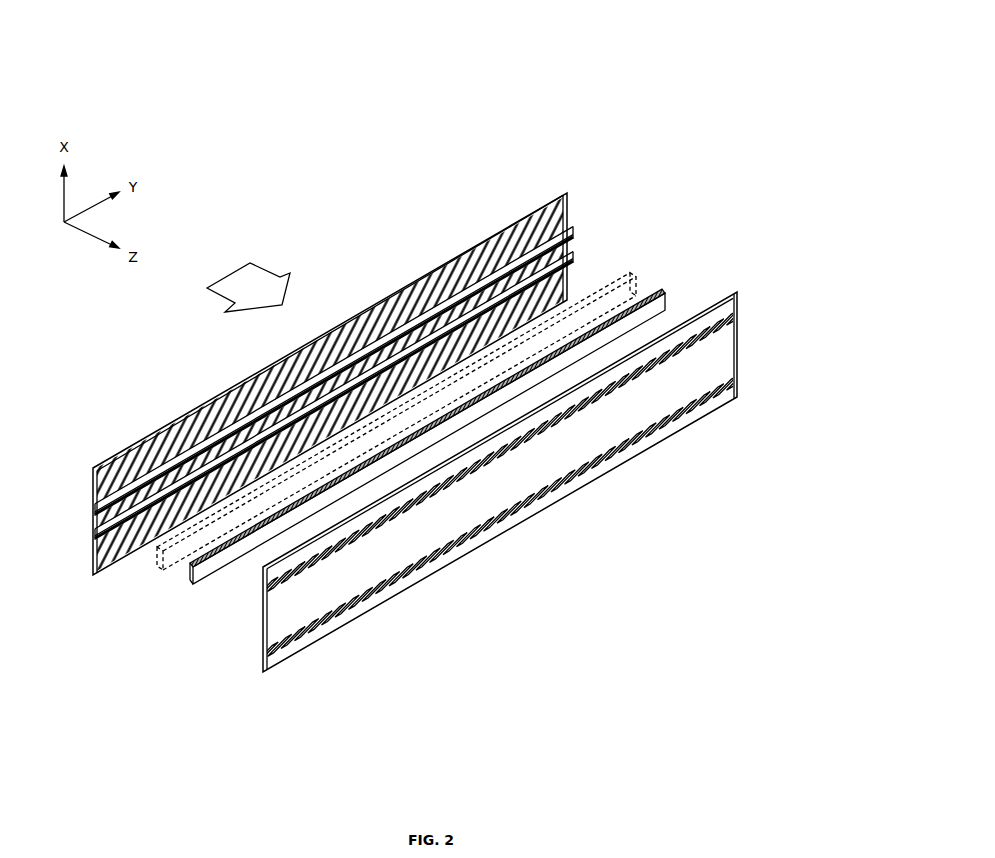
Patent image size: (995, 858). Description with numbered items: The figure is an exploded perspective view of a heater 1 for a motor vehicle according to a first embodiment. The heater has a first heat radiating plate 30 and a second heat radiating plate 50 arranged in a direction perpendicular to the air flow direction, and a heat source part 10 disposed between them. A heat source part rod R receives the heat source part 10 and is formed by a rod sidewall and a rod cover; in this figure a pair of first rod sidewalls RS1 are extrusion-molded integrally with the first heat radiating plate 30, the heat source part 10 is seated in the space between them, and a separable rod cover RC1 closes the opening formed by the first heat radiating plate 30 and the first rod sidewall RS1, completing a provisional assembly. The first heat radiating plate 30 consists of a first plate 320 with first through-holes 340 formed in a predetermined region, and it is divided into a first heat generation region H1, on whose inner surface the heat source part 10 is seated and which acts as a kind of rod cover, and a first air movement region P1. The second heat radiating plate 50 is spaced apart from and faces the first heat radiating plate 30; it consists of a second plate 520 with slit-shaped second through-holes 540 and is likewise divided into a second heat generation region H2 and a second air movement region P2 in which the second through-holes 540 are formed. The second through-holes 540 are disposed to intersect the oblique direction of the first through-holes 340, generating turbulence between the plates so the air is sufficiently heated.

The display device 1 is at (731, 95).
The heat source part 10 is at (146, 575).
The first heat radiating plate 30 is at (583, 147).
The first plate 320 is at (567, 203).
The first through-hole 340 is at (566, 192).
The second heat radiating plate 50 is at (790, 300).
The second plate 520 is at (720, 347).
The second through-hole 540 is at (724, 313).
The heat source part rod R is at (720, 228).
The first rod sidewall RS1 is at (573, 232).
The separable rod cover RC1 is at (667, 301).
The first air movement region P1 is at (90, 468).
The first heat generation region H1 is at (90, 505).
The second air movement region P2 is at (257, 568).
The second heat generation region H2 is at (257, 603).